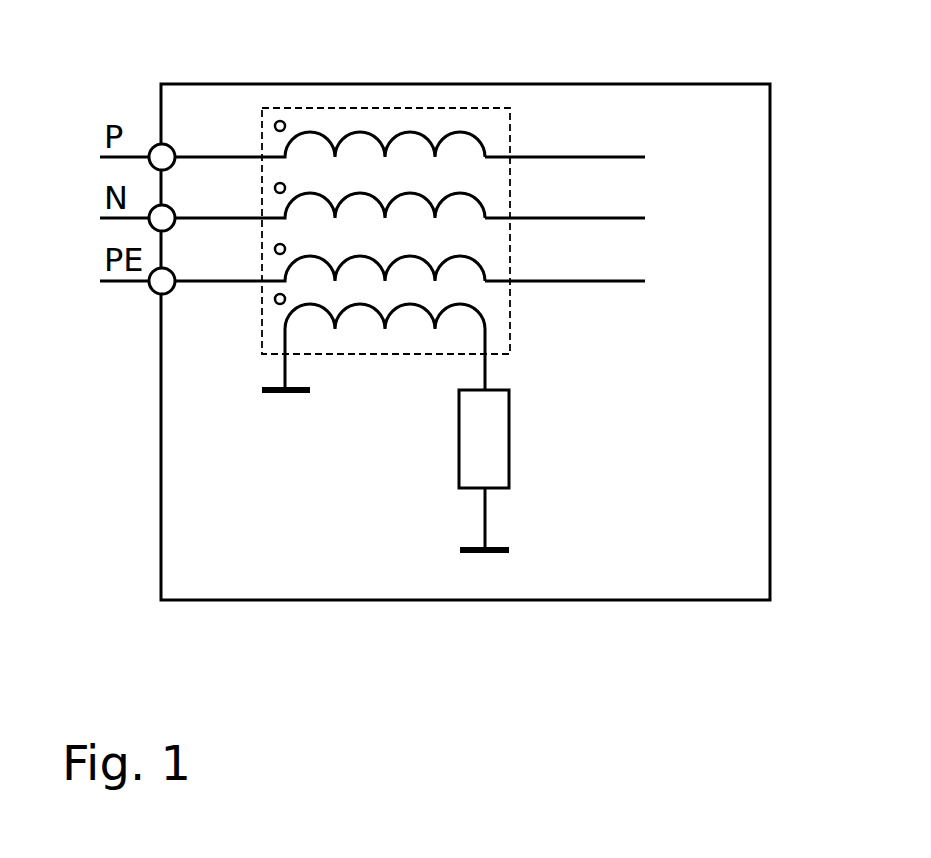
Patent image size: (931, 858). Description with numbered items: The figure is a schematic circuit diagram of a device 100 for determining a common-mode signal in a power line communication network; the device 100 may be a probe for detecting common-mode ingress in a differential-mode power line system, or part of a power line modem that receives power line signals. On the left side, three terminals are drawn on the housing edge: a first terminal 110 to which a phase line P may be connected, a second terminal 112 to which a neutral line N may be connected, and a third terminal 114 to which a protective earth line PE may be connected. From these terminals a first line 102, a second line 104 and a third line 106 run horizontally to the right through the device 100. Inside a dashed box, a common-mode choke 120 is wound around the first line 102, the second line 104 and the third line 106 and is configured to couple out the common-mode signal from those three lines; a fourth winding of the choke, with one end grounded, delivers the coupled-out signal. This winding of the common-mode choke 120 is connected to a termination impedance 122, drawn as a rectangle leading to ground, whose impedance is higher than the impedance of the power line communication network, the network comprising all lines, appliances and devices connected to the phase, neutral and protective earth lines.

The device 100 is at (672, 83).
The first line 102 is at (612, 157).
The second line 104 is at (612, 218).
The third line 106 is at (603, 281).
The first terminal 110 is at (171, 146).
The second terminal 112 is at (171, 207).
The third terminal 114 is at (171, 270).
The common-mode choke 120 is at (409, 108).
The termination impedance 122 is at (511, 438).